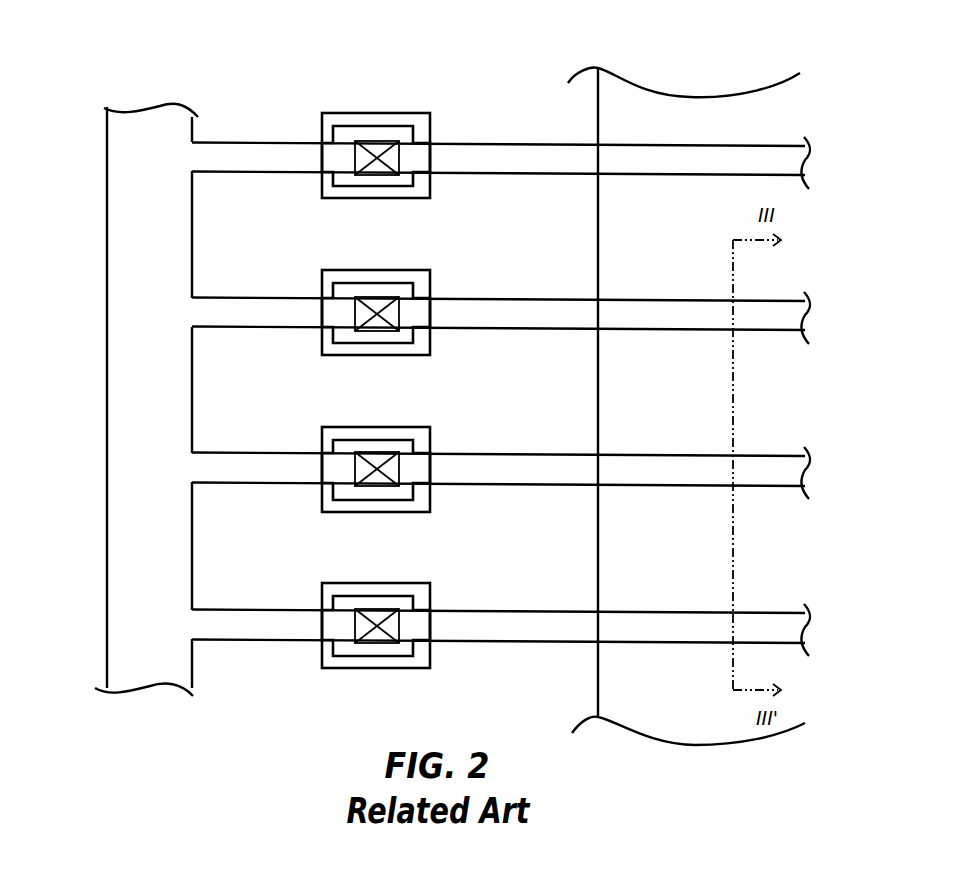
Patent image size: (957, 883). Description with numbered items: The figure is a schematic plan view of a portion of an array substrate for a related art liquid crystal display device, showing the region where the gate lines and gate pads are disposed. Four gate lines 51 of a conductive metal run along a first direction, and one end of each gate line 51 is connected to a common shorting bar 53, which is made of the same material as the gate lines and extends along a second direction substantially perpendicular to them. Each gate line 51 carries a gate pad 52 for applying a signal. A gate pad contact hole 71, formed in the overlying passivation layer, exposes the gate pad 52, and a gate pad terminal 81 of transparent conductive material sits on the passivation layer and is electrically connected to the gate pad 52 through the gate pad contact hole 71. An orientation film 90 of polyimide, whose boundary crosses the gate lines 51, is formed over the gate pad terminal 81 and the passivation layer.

The gate line 51 is at (503, 143).
The gate pad 52 is at (348, 126).
The shorting bar 53 is at (107, 310).
The gate pad contact hole 71 is at (399, 141).
The gate pad terminal 81 is at (372, 113).
The orientation film 90 is at (658, 108).